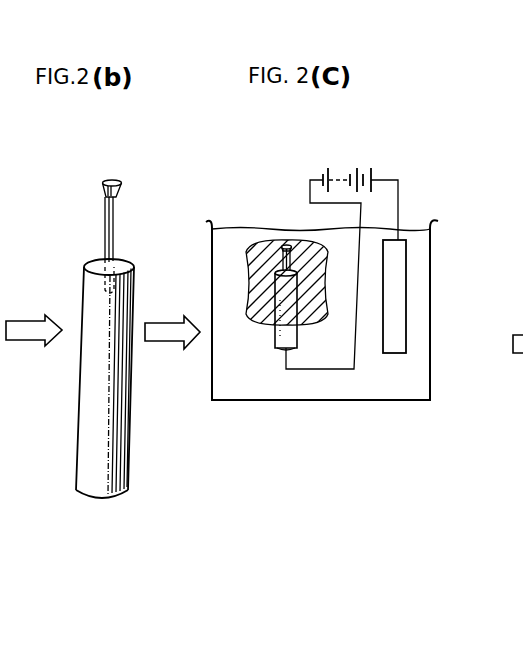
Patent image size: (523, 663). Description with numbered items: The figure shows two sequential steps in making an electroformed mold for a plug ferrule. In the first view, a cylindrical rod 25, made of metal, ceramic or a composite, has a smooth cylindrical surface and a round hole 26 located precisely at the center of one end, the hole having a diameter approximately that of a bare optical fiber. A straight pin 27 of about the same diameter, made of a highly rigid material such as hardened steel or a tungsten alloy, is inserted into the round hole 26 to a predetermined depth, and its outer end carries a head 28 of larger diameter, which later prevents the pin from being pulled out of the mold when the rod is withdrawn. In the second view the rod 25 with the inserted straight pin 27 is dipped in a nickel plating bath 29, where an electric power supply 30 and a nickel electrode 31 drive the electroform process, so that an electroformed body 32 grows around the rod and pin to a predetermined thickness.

In FIG. 2B, the cylindrical rod 25 is at (118, 420).
In FIG. 2C, the cylindrical rod 25 is at (280, 343).
In FIG. 2B, the round hole 26 is at (120, 281).
In FIG. 2B, the straight pin 27 is at (114, 229).
In FIG. 2C, the straight pin 27 is at (280, 255).
In FIG. 2B, the head 28 is at (124, 190).
In FIG. 2C, the nickel plating bath 29 is at (403, 367).
In FIG. 2C, the electric power supply 30 is at (342, 170).
In FIG. 2C, the nickel electrode 31 is at (395, 268).
In FIG. 2C, the electroformed body 32 is at (260, 307).